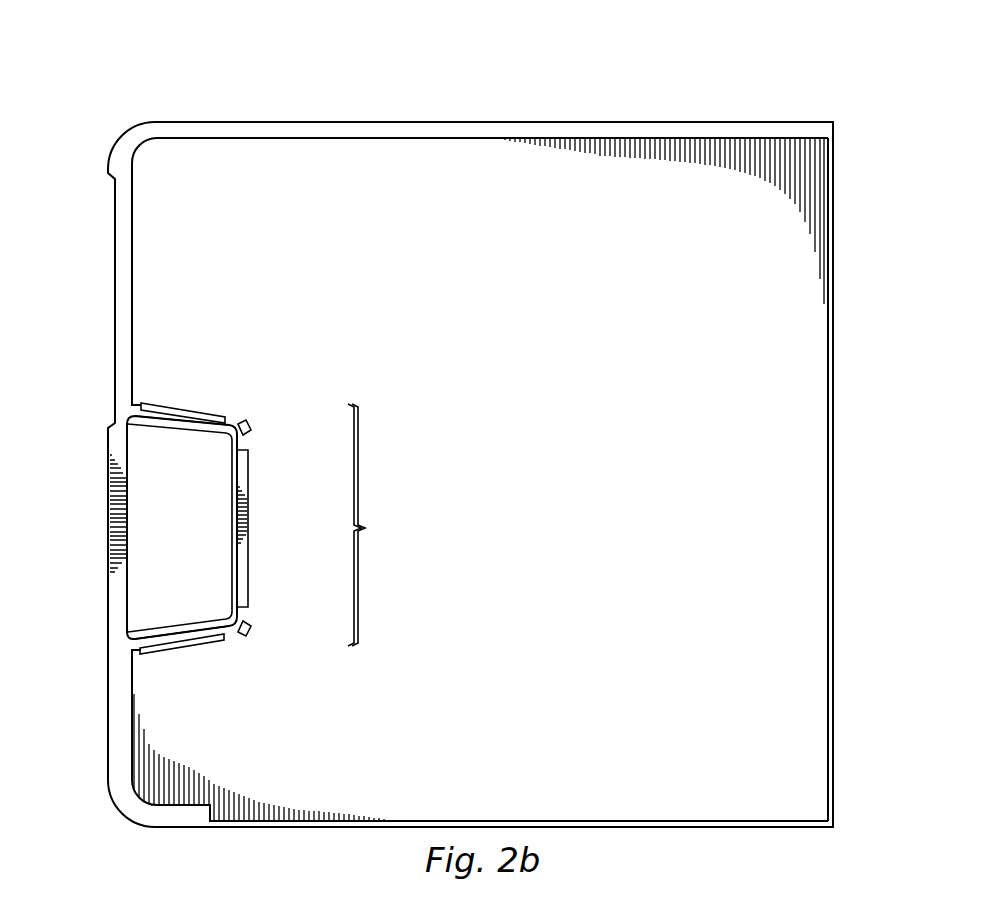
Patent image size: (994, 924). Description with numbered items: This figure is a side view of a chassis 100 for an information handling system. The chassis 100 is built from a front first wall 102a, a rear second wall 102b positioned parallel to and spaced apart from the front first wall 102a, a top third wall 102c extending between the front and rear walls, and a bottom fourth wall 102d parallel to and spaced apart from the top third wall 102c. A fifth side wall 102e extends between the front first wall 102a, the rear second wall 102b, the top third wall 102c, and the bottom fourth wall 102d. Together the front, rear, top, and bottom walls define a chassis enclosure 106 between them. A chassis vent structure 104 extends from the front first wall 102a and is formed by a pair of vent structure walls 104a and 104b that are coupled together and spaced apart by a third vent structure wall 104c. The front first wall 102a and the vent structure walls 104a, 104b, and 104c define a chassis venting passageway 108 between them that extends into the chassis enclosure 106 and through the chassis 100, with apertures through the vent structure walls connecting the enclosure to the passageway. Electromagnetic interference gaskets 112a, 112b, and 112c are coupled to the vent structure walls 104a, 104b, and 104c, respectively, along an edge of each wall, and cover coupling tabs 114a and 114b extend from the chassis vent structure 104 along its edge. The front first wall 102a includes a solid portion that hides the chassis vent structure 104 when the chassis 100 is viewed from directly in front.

The chassis 100 is at (767, 85).
The front first wall 102a is at (108, 608).
The rear second wall 102b is at (835, 657).
The top third wall 102c is at (310, 121).
The bottom fourth wall 102d is at (708, 828).
The fifth side wall 102e is at (808, 402).
The chassis vent structure 104 is at (379, 525).
The vent structure wall 104a is at (188, 425).
The vent structure wall 104b is at (187, 630).
The vent structure wall 104c is at (240, 578).
The chassis enclosure 106 is at (612, 498).
The chassis venting passageway 108 is at (204, 543).
The electromagnetic interference gasket 112a is at (173, 402).
The electromagnetic interference gasket 112b is at (168, 655).
The electromagnetic interference gasket 112c is at (250, 497).
The cover coupling tab 114a is at (245, 420).
The cover coupling tab 114b is at (246, 637).